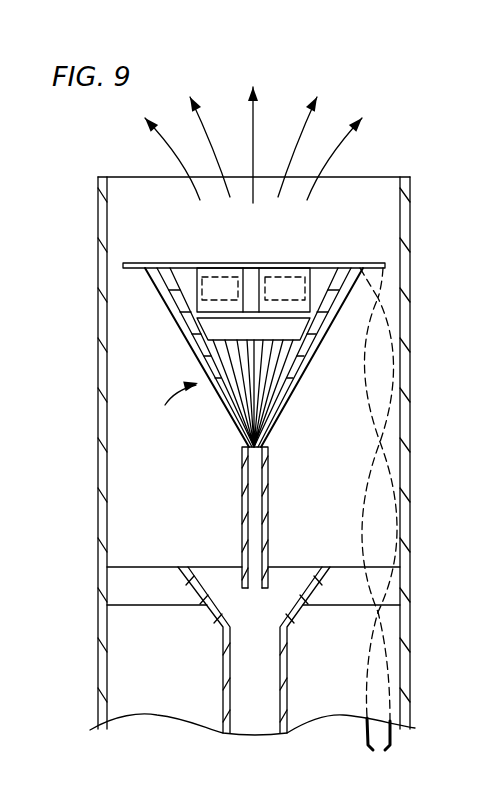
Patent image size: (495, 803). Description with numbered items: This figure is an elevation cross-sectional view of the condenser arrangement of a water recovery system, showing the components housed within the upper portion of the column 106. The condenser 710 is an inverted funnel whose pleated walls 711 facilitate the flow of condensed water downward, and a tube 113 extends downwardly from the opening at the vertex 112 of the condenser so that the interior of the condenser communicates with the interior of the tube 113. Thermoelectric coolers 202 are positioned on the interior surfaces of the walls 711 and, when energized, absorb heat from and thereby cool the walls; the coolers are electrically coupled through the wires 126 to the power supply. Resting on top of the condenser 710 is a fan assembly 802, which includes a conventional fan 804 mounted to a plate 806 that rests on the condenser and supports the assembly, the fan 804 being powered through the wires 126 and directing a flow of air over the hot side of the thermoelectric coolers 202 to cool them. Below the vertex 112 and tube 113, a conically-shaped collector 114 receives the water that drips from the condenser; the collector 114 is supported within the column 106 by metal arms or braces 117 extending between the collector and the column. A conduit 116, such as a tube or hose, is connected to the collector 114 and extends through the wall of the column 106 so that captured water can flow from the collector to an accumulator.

The column 106 is at (404, 457).
The vertex 112 is at (240, 452).
The tube 113 is at (268, 497).
The collector 114 is at (215, 575).
The conduit 116 is at (220, 714).
The arms or braces 117 is at (128, 600).
The wires 126 is at (366, 730).
The thermoelectric cooler 202 is at (205, 276).
The condenser 710 is at (161, 410).
The walls 711 is at (230, 418).
The fan assembly 802 is at (218, 313).
The fan 804 is at (272, 337).
The plate 806 is at (148, 266).